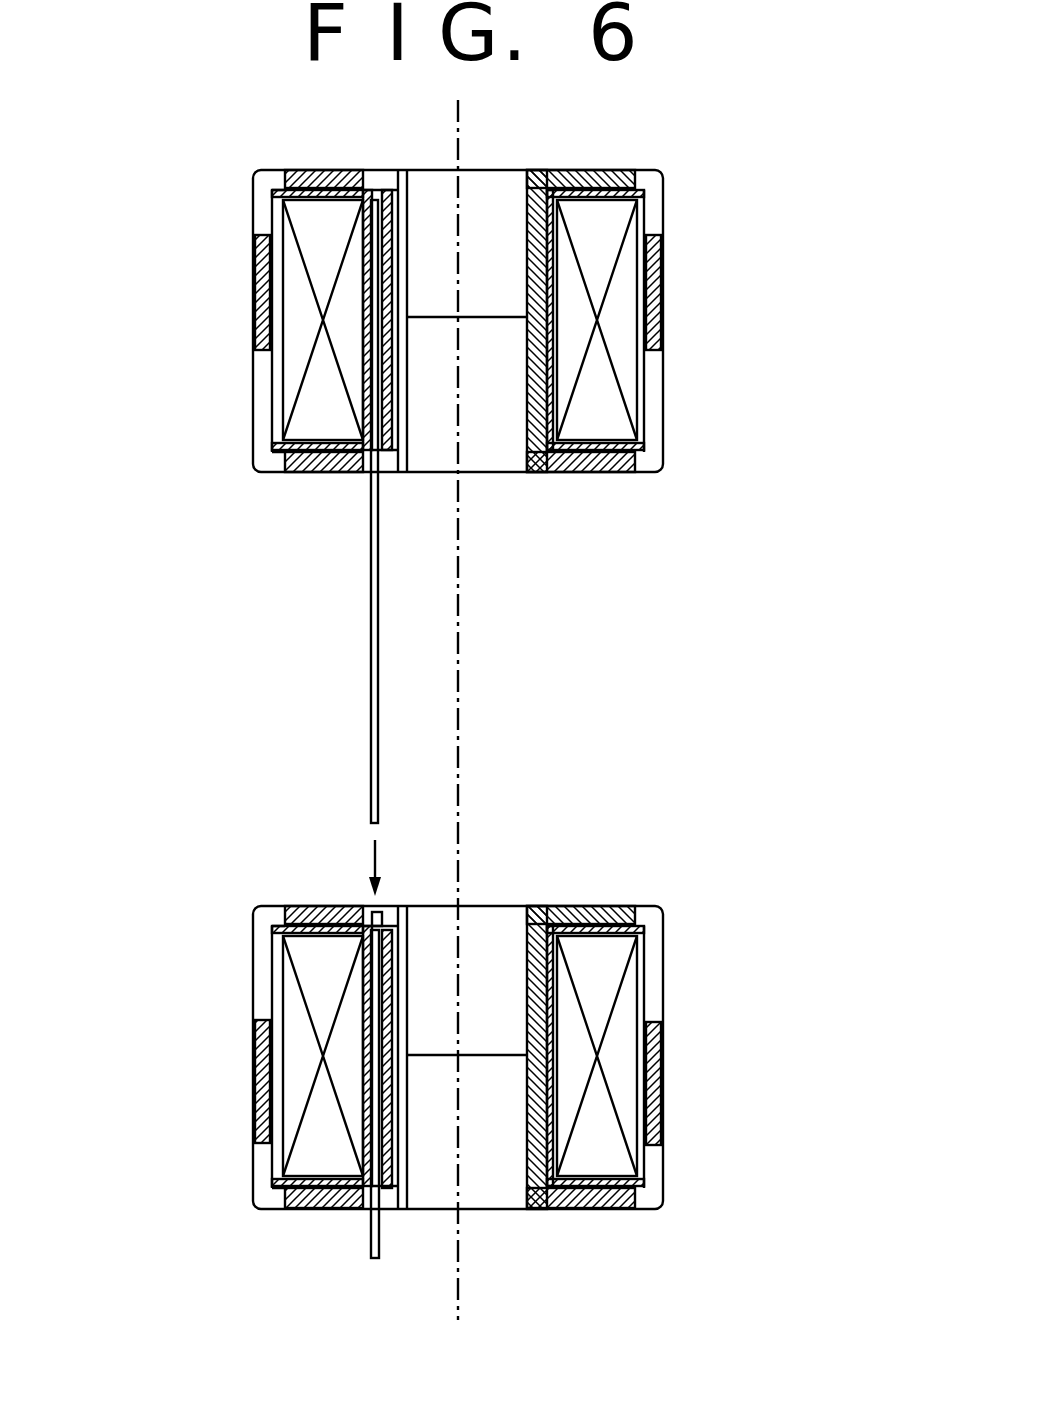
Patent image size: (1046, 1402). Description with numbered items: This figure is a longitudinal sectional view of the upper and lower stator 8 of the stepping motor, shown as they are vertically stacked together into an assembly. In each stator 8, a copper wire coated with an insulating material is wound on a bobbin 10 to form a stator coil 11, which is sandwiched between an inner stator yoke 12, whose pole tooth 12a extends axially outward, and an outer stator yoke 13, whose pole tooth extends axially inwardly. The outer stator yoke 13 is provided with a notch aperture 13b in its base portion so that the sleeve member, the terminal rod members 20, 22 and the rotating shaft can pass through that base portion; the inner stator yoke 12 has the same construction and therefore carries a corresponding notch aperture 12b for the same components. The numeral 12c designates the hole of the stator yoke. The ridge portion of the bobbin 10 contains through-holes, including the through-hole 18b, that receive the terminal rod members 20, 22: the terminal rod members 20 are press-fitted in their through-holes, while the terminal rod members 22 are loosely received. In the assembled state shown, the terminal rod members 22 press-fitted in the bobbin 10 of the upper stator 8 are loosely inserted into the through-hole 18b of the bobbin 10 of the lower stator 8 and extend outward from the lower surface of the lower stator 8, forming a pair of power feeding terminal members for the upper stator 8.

The stator 8 is at (668, 198).
The bobbin 10 is at (272, 192).
The stator coil 11 is at (296, 358).
The inner stator yoke 12 is at (592, 475).
The pole tooth 12a is at (257, 288).
The notch aperture 12b is at (395, 455).
The hole of the stator yoke 12c is at (258, 413).
The outer stator yoke 13 is at (600, 170).
The notch aperture 13b is at (386, 188).
The through-hole 18b is at (390, 906).
The terminal rod member 20 is at (370, 1232).
The terminal rod member 22 is at (372, 652).